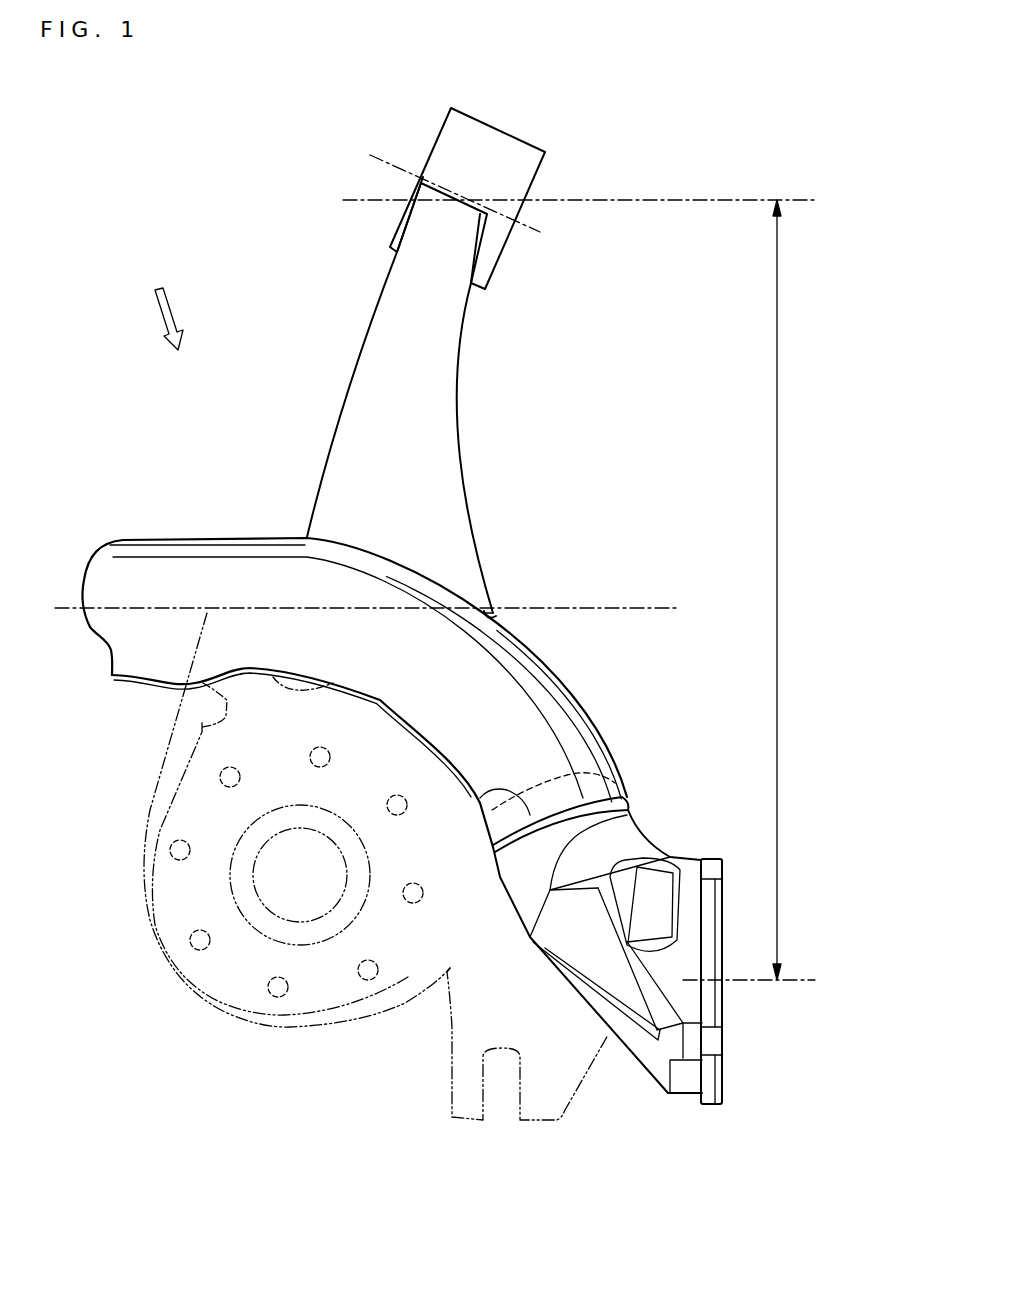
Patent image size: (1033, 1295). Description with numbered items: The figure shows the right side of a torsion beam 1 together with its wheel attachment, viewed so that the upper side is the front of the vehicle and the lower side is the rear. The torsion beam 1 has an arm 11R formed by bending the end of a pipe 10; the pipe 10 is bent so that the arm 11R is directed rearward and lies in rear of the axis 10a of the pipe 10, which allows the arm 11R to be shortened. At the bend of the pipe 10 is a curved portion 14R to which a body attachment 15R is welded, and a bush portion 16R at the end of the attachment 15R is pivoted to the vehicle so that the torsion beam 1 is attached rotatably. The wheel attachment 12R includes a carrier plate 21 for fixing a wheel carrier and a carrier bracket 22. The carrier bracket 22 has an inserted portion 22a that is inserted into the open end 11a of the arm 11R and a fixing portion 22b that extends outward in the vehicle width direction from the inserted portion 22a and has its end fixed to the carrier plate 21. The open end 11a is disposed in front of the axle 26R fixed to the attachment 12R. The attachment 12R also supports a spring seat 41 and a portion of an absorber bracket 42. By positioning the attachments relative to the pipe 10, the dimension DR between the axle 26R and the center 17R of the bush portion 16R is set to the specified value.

The torsion beam 1 is at (165, 304).
The pipe 10 is at (396, 656).
The axis of the pipe 10a is at (647, 605).
The arm 11R is at (607, 681).
The open end of the arm 11a is at (480, 802).
The wheel attachment 12R is at (596, 908).
The curved portion 14R is at (403, 620).
The body attachment 15R is at (496, 425).
The bush portion 16R is at (574, 148).
The center of the bush portion 17R is at (540, 232).
The carrier plate 21 is at (724, 1075).
The carrier bracket 22 is at (579, 971).
The inserted portion 22a is at (528, 850).
The fixing portion 22b is at (610, 967).
The axle 26R is at (794, 977).
The spring seat 41 is at (262, 1030).
The absorber bracket 42 is at (540, 1122).
The dimension DR is at (791, 549).